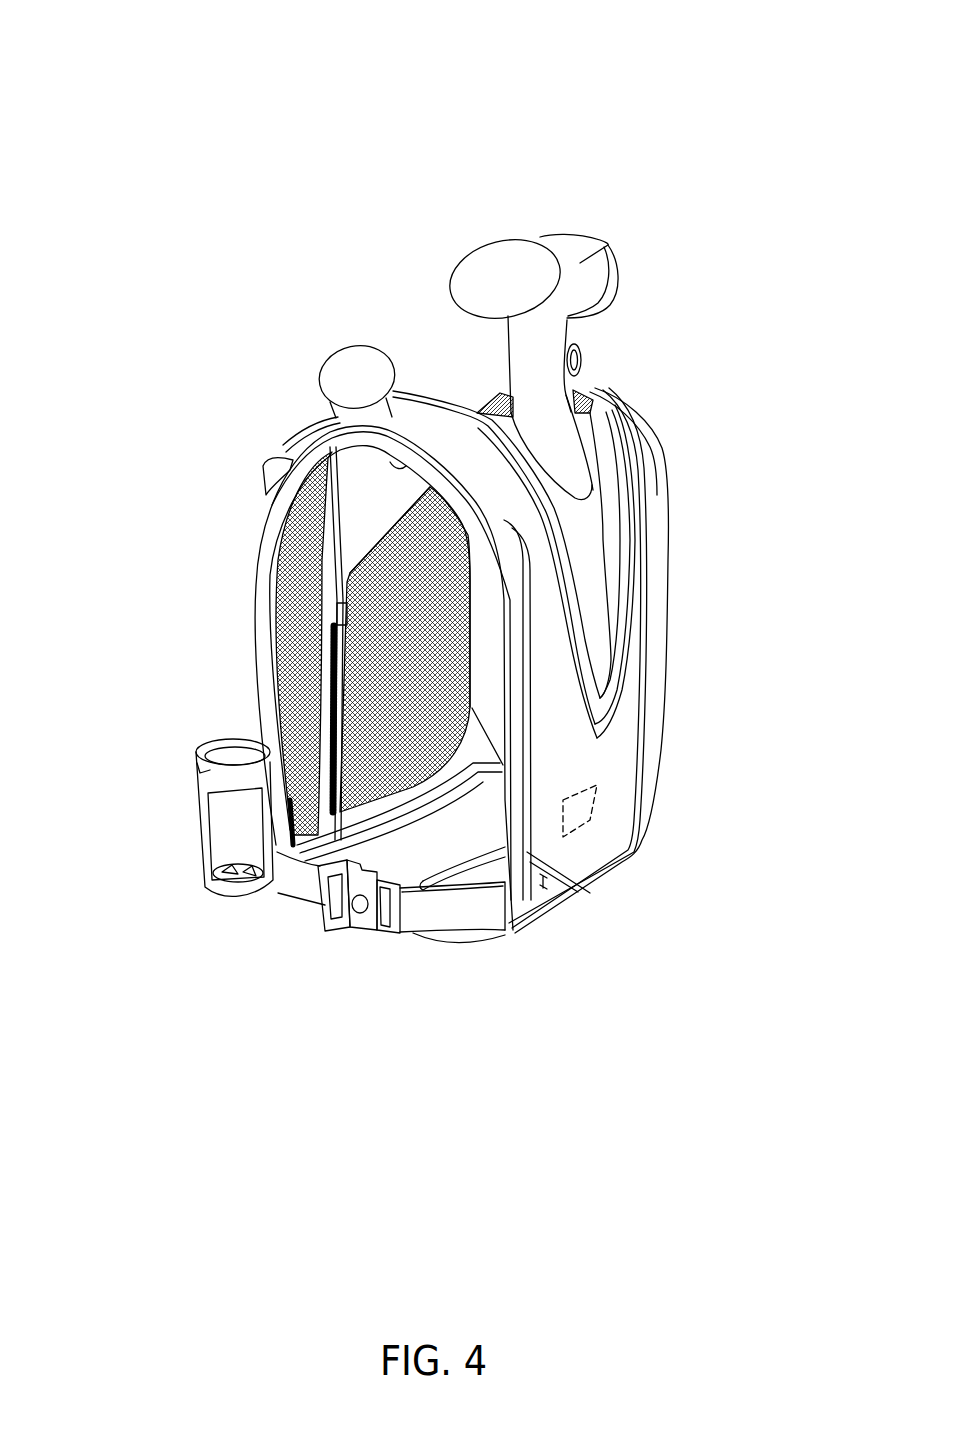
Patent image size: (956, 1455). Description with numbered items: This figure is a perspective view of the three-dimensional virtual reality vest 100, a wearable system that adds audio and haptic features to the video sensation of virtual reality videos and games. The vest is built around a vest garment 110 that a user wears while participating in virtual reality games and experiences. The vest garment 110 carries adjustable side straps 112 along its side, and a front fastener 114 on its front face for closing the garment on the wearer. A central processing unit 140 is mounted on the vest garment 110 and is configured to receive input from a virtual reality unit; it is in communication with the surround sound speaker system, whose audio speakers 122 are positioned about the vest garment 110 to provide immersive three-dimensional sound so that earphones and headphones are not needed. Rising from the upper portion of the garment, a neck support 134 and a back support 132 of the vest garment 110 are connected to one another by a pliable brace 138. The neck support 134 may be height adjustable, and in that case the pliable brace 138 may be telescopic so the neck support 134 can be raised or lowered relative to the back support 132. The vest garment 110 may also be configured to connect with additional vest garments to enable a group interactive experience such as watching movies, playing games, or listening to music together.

The three-dimensional virtual reality vest 100 is at (598, 97).
The vest garment 110 is at (598, 160).
The adjustable side straps 112 is at (303, 878).
The front fastener 114 is at (320, 703).
The audio speakers 122 is at (357, 377).
The back support 132 is at (607, 548).
The neck support 134 is at (610, 245).
The pliable brace 138 is at (540, 368).
The central processing unit 140 is at (583, 827).